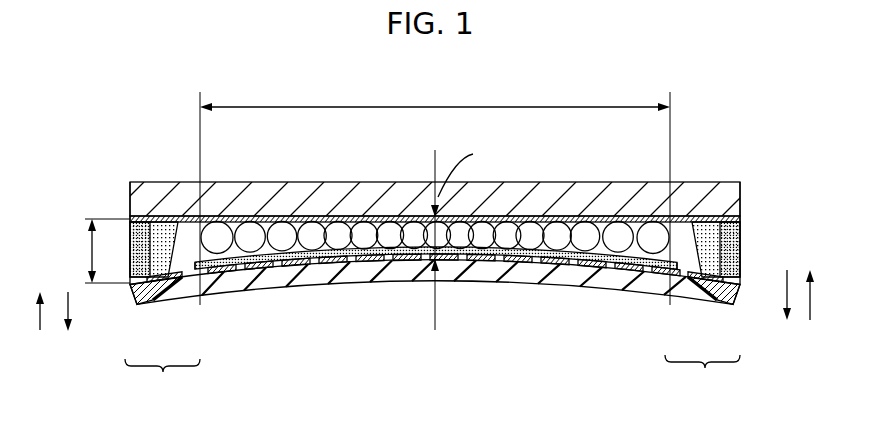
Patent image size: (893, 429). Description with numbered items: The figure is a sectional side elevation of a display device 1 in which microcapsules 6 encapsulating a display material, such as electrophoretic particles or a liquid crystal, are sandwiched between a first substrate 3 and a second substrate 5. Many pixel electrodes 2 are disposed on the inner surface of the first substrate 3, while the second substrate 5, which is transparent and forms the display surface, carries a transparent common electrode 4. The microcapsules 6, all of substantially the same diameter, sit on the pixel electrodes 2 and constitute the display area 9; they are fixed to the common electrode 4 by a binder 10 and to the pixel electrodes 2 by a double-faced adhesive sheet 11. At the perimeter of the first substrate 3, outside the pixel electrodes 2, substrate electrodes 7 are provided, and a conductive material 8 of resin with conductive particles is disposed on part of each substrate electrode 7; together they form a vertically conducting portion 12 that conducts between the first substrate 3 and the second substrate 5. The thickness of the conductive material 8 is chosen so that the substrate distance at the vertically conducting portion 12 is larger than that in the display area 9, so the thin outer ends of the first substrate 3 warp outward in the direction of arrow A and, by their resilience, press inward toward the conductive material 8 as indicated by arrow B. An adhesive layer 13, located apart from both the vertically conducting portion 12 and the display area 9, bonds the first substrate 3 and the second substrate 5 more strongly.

The display device 1 is at (727, 158).
The pixel electrodes 2 is at (258, 270).
The first substrate 3 is at (632, 292).
The common electrode 4 is at (297, 197).
The second substrate 5 is at (338, 217).
The microcapsules 6 is at (280, 230).
The substrate electrodes 7 is at (173, 293).
The conductive material 8 is at (140, 284).
The display area 9 is at (435, 193).
The binder 10 is at (375, 215).
The double-faced adhesive sheet 11 is at (200, 278).
The vertically conducting portion 12 is at (432, 377).
The adhesive layer 13 is at (135, 240).